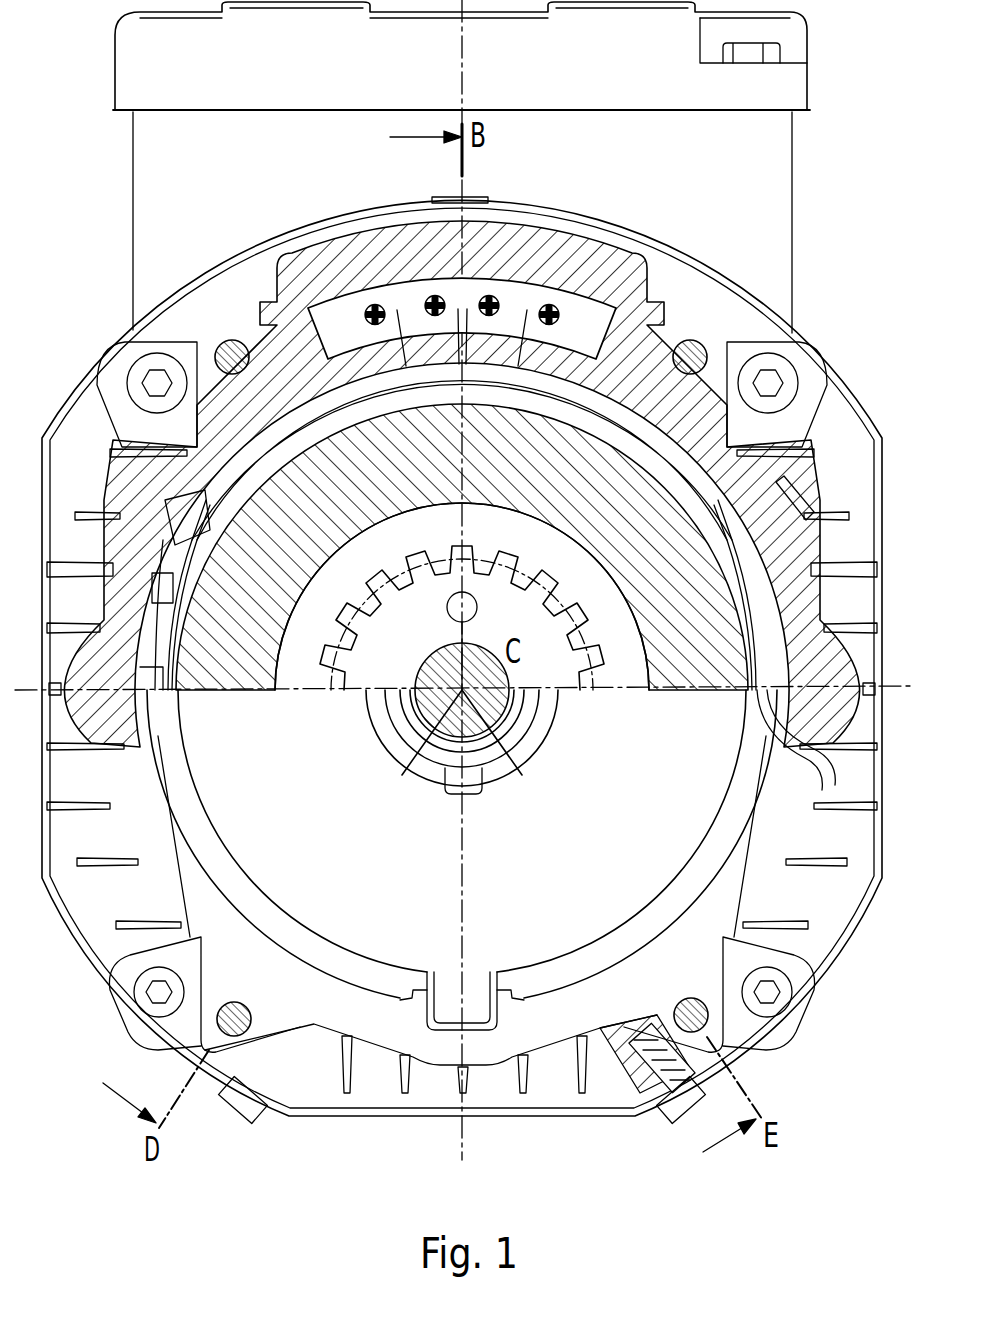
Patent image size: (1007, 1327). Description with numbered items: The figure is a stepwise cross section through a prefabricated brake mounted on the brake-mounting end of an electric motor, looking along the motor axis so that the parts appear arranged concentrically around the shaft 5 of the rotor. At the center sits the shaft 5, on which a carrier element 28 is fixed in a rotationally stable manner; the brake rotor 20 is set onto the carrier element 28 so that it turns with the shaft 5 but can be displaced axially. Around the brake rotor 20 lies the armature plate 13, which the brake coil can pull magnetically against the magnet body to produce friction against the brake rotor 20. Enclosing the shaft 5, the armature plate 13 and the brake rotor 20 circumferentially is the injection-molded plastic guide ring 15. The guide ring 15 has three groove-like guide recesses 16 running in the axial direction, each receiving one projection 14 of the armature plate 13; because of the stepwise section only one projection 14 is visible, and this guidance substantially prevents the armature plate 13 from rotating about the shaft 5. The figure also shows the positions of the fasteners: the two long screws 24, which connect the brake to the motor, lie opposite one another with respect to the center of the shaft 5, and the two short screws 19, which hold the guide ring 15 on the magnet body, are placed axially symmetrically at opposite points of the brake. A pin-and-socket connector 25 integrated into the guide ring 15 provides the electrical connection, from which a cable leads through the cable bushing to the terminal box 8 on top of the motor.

The shaft 5 is at (412, 712).
The terminal box 8 is at (147, 180).
The armature plate 13 is at (312, 833).
The projection 14 is at (447, 1000).
The guide ring 15 is at (813, 545).
The guide recess 16 is at (177, 513).
The short screw 19 is at (232, 340).
The brake rotor 20 is at (228, 663).
The long screw 24 is at (690, 340).
The pin-and-socket connector 25 is at (540, 300).
The carrier element 28 is at (558, 670).